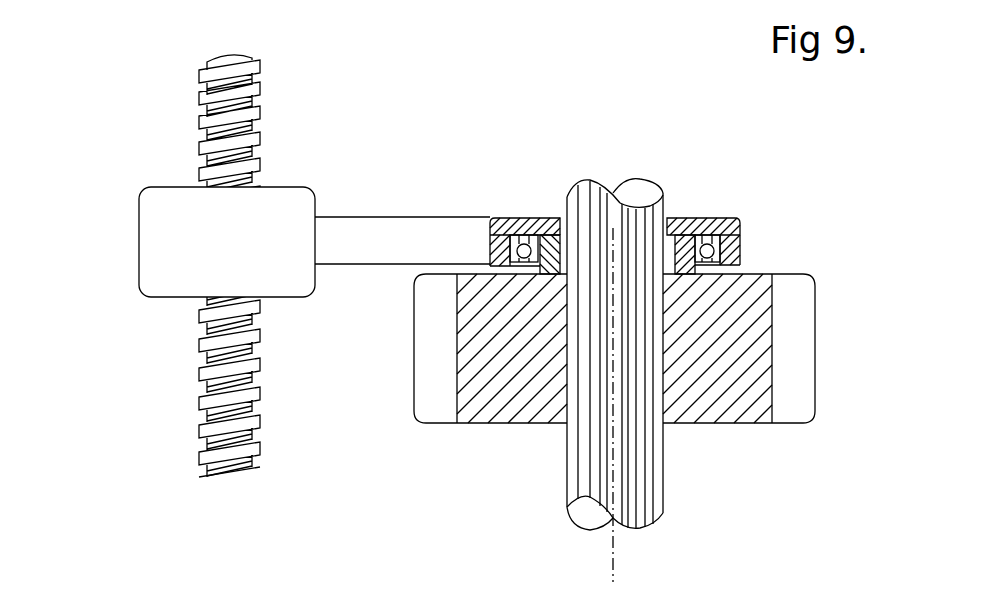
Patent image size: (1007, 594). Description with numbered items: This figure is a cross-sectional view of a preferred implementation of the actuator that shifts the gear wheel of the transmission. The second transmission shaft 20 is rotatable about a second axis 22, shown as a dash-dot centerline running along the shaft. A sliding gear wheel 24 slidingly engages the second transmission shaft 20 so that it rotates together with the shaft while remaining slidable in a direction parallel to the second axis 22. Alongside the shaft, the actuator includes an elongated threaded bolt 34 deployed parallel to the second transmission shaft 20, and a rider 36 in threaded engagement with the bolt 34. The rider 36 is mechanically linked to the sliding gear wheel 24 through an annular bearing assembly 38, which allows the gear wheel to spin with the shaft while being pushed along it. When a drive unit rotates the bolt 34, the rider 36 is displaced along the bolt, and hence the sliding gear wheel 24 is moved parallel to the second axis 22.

The second transmission shaft 20 is at (640, 429).
The second axis 22 is at (594, 570).
The sliding gear wheel 24 is at (729, 298).
The elongated threaded bolt 34 is at (189, 324).
The rider 36 is at (162, 208).
The annular bearing assembly 38 is at (525, 214).